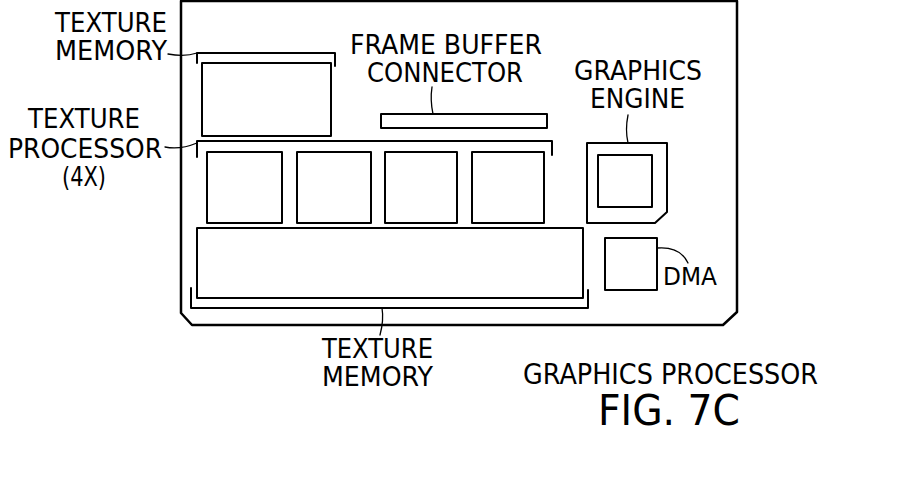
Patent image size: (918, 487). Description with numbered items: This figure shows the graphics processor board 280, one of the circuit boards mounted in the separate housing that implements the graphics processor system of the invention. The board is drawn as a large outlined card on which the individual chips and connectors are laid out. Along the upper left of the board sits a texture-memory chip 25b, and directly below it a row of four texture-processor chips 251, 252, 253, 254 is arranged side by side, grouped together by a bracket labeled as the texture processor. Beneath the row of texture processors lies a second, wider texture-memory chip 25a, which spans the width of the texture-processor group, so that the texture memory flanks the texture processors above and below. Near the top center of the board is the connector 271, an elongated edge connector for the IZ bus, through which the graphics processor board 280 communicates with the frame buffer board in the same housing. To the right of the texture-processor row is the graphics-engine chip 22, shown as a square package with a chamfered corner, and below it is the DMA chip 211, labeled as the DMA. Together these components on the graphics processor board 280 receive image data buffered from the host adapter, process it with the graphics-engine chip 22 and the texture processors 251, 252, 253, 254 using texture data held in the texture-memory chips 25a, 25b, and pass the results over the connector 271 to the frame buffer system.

The graphics processor board 280 is at (737, 38).
The texture-memory chip 25b is at (286, 108).
The texture-memory chip 25a is at (408, 274).
The texture-processor chip 251 is at (267, 197).
The texture-processor chip 252 is at (356, 197).
The texture-processor chip 253 is at (442, 197).
The texture-processor chip 254 is at (528, 197).
The connector 271 is at (507, 114).
The graphics-engine chip 22 is at (637, 197).
The DMA chip 211 is at (650, 273).